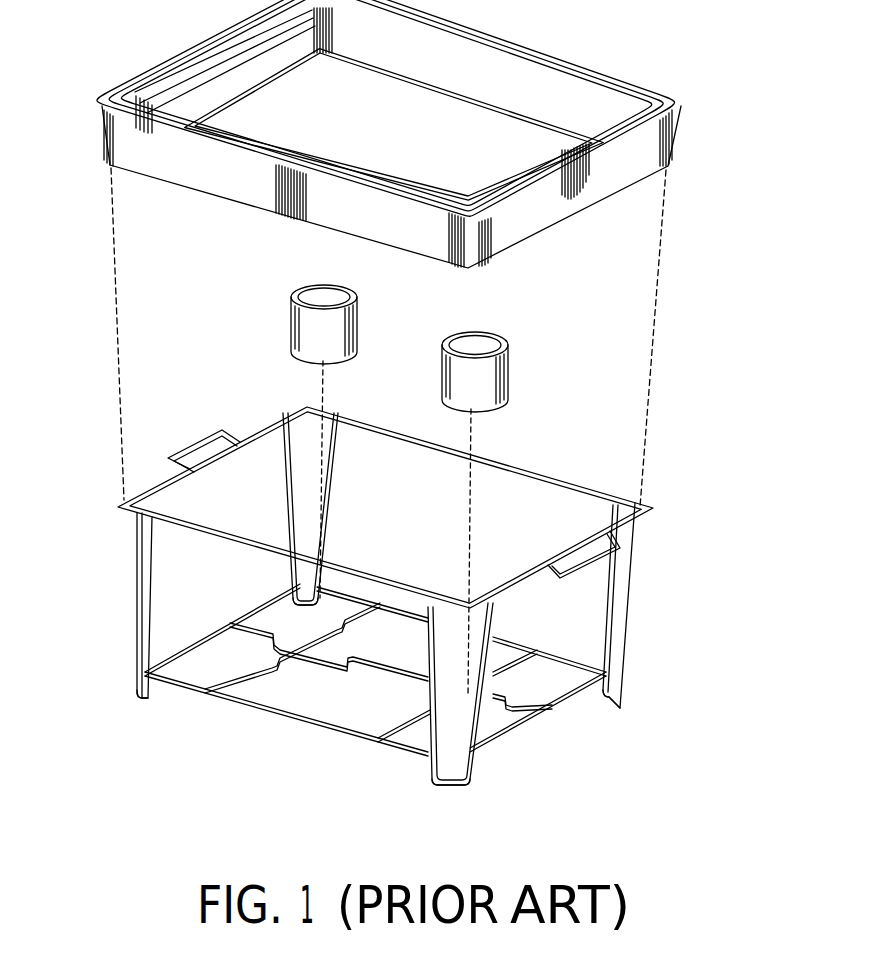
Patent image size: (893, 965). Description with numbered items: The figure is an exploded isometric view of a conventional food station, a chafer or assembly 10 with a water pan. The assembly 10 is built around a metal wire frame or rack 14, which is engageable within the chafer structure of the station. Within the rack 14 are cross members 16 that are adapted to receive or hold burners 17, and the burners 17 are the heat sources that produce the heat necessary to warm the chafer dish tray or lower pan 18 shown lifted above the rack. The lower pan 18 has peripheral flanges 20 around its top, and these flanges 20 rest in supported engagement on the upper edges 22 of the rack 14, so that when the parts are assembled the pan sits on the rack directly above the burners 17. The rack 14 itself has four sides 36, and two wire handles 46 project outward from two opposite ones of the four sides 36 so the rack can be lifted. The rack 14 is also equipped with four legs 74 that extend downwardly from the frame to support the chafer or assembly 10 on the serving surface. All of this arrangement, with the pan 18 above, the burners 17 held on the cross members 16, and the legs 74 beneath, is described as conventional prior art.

The chafer or assembly 10 is at (407, 563).
The metal wire frame or rack 14 is at (628, 630).
The cross members 16 is at (300, 690).
The burners 17 is at (290, 333).
The chafer dish tray or lower pan 18 is at (675, 131).
The peripheral flanges 20 is at (612, 72).
The upper edges 22 is at (542, 473).
The sides 36 is at (250, 423).
The wire handles 46 is at (180, 446).
The legs 74 is at (297, 612).